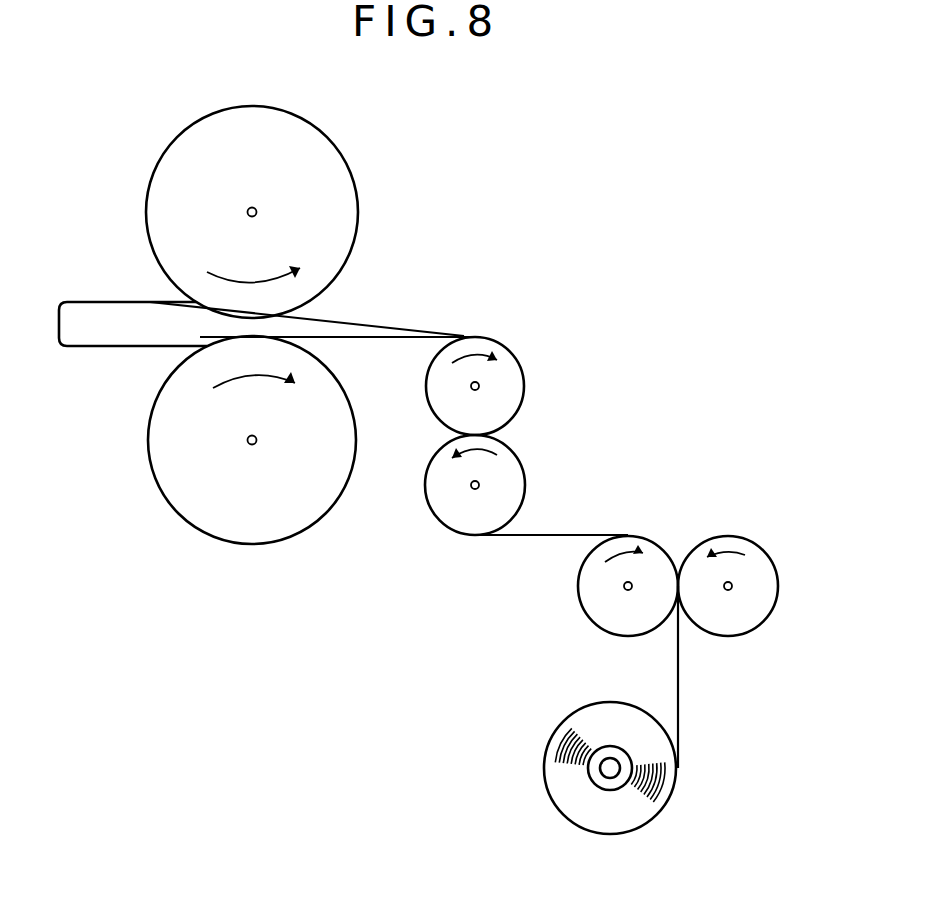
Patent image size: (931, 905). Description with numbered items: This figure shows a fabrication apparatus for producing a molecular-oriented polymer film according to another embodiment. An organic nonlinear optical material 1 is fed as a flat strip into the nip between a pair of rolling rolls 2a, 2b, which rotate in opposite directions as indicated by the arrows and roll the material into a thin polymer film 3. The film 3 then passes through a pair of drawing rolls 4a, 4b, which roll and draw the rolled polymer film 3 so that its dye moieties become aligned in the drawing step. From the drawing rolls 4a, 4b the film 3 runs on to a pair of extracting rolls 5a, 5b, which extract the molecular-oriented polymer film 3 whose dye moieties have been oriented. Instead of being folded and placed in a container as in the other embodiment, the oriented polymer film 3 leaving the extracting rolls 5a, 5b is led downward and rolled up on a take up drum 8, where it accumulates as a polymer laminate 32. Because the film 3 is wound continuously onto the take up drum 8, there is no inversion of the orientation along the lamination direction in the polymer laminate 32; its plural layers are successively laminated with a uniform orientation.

The organic nonlinear optical material 1 is at (90, 323).
The rolling roll 2a is at (330, 183).
The rolling roll 2b is at (213, 520).
The polymer film 3 is at (404, 328).
The drawing roll 4a is at (515, 377).
The drawing roll 4b is at (452, 510).
The extracting roll 5a is at (603, 613).
The extracting roll 5b is at (763, 573).
The take up drum 8 is at (600, 788).
The polymer laminate 32 is at (638, 813).